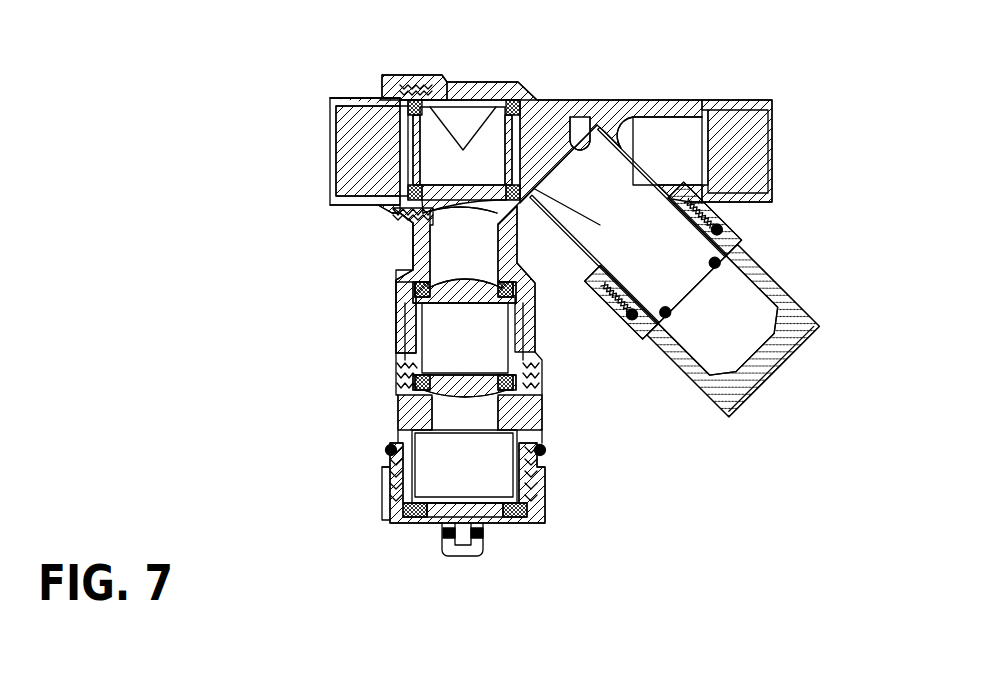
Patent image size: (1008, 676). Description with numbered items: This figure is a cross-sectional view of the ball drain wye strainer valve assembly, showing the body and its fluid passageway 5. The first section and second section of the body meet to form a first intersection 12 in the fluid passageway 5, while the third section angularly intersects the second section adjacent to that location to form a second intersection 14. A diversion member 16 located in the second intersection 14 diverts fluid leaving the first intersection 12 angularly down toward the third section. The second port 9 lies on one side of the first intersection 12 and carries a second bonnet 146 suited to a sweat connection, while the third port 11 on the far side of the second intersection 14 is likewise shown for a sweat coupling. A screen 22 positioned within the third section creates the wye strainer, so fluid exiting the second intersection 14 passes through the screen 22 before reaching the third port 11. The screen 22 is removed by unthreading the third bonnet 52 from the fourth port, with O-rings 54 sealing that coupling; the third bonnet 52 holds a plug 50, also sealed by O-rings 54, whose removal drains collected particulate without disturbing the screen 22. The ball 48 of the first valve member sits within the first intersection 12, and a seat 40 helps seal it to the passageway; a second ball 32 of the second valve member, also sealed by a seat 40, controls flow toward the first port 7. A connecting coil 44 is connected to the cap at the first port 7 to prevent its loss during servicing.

The fluid passageway 5 is at (360, 168).
The second bonnet 146 is at (360, 100).
The second port 9 is at (412, 80).
The seat 40 is at (408, 100).
The first intersection 12 is at (463, 150).
The second intersection 14 is at (542, 157).
The diversion member 16 is at (535, 183).
The third port 11 is at (740, 106).
The screen 22 is at (628, 225).
The O-rings 54 is at (699, 226).
The third bonnet 52 is at (629, 296).
The plug 50 is at (733, 330).
The ball 48 is at (452, 222).
The ball 32 is at (420, 347).
The first port 7 is at (400, 414).
The connecting coil 44 is at (545, 452).